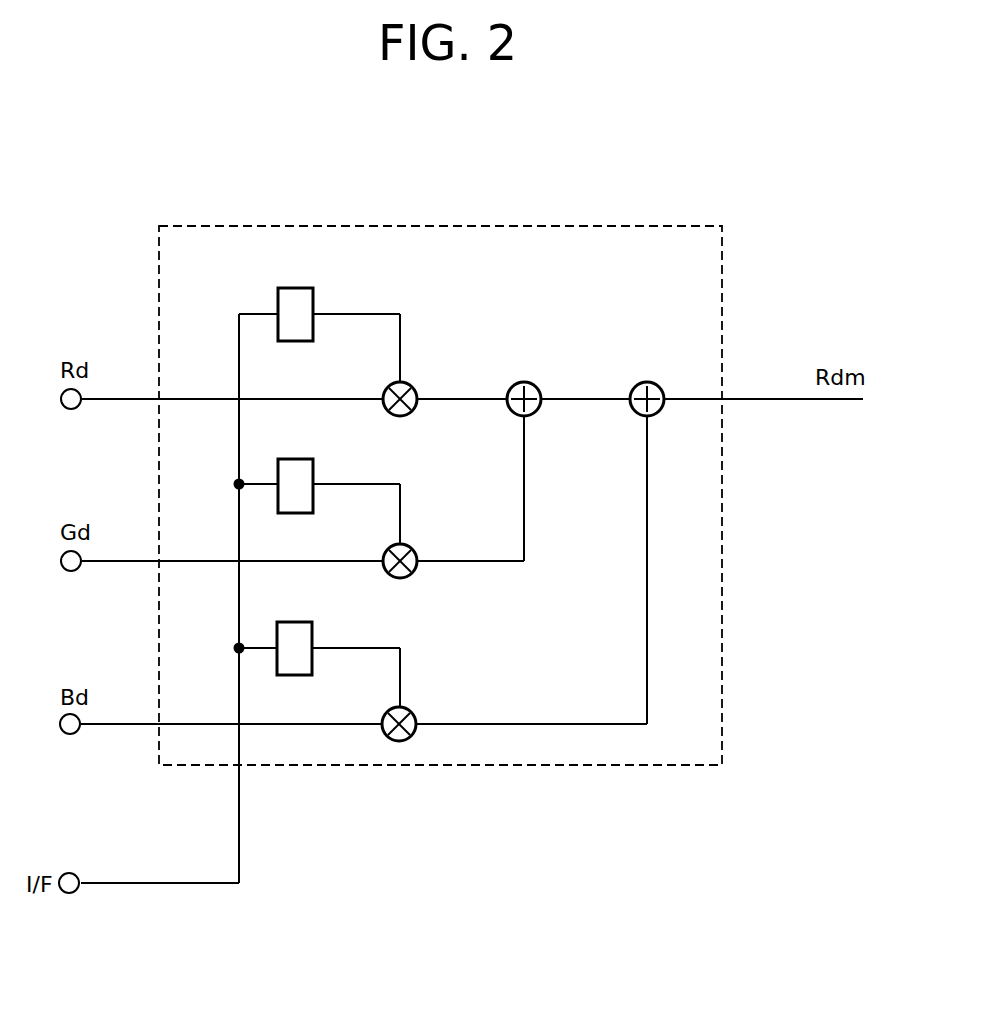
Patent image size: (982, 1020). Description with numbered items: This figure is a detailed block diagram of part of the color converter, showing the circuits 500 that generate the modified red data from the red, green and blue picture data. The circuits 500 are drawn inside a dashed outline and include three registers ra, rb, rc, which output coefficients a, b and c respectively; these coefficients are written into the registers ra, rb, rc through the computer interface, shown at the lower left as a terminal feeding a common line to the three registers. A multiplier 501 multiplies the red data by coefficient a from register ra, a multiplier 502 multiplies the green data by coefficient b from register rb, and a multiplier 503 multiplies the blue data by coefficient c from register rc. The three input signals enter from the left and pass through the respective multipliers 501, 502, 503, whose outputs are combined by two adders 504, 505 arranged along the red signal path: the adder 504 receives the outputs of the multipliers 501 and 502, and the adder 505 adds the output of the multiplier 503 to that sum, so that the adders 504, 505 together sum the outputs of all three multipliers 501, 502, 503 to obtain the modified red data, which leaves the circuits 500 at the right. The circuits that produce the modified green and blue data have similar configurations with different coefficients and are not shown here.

The circuits 500 is at (722, 308).
The multiplier 501 is at (409, 380).
The multiplier 502 is at (410, 550).
The multiplier 503 is at (410, 713).
The adder 504 is at (530, 381).
The adder 505 is at (650, 382).
The register ra is at (308, 288).
The register rb is at (308, 459).
The register rc is at (308, 622).